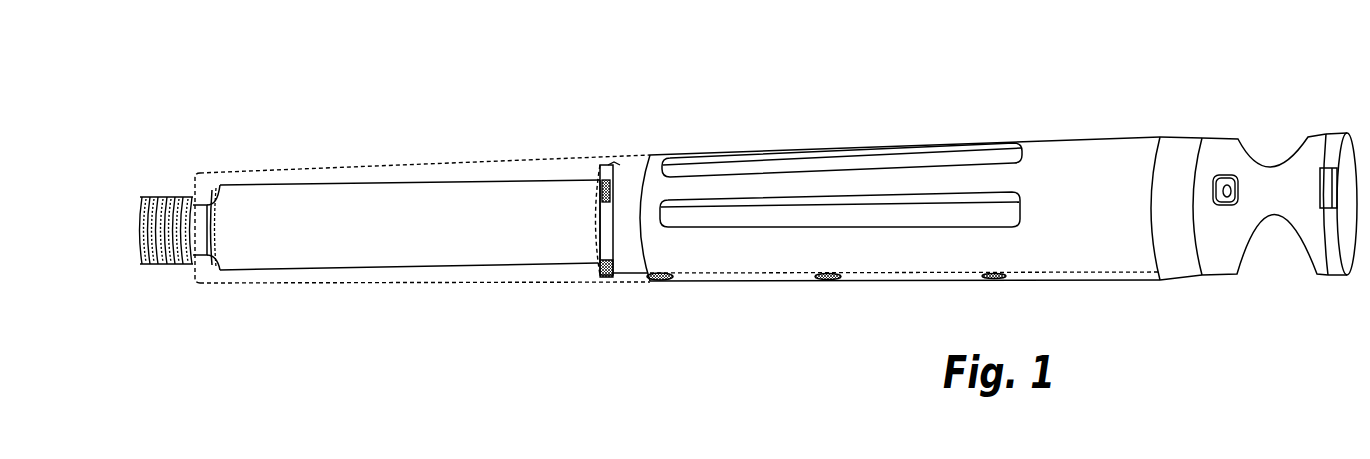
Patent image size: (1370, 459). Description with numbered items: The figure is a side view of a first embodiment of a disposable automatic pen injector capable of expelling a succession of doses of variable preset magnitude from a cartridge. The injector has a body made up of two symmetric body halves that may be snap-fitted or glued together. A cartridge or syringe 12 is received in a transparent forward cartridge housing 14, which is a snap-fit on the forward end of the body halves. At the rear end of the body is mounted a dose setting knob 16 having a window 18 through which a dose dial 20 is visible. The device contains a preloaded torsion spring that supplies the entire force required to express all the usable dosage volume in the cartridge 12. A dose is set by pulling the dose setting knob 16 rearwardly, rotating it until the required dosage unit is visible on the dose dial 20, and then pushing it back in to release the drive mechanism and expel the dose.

The cartridge 12 is at (393, 205).
The forward cartridge housing 14 is at (495, 263).
The dose setting knob 16 is at (1273, 247).
The window 18 is at (1227, 160).
The dose dial 20 is at (1237, 188).